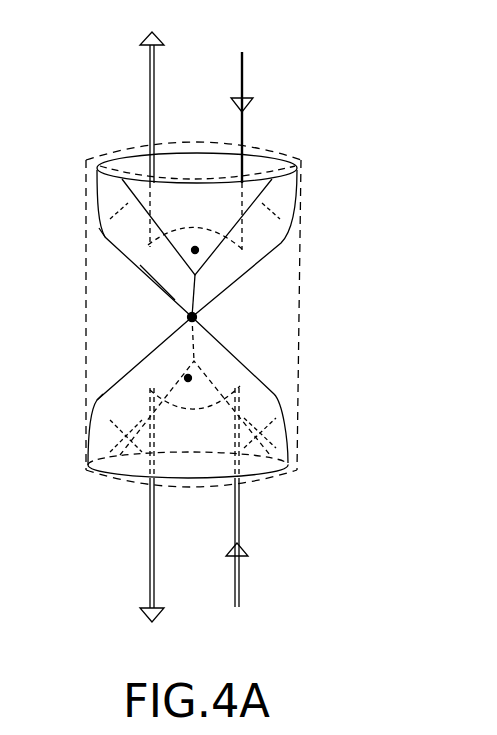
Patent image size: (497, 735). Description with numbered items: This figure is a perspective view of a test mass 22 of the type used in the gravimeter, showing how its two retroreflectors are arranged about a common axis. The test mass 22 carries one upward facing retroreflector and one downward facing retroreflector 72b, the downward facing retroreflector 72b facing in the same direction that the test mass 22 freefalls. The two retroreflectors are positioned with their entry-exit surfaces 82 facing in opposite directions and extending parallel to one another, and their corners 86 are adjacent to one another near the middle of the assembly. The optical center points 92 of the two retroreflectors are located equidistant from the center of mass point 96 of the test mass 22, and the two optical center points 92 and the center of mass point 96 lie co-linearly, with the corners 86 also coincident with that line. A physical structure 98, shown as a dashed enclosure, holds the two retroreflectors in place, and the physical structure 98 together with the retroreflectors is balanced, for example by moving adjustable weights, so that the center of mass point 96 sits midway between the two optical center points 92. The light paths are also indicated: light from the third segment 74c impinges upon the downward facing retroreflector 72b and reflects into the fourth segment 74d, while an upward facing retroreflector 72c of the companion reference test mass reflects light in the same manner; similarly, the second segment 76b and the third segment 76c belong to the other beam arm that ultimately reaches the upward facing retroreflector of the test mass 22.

The test mass 22 is at (68, 281).
The downward facing retroreflector 72b is at (92, 247).
The upward facing retroreflector 72c is at (72, 386).
The third segment 74c is at (240, 570).
The fourth segment 74d is at (150, 586).
The second segment 76b is at (244, 68).
The third segment 76c is at (151, 63).
The entry-exit surfaces 82 is at (262, 166).
The corners 86 is at (165, 289).
The optical center points 92 is at (198, 252).
The center of mass point 96 is at (195, 318).
The physical structure 98 is at (84, 322).